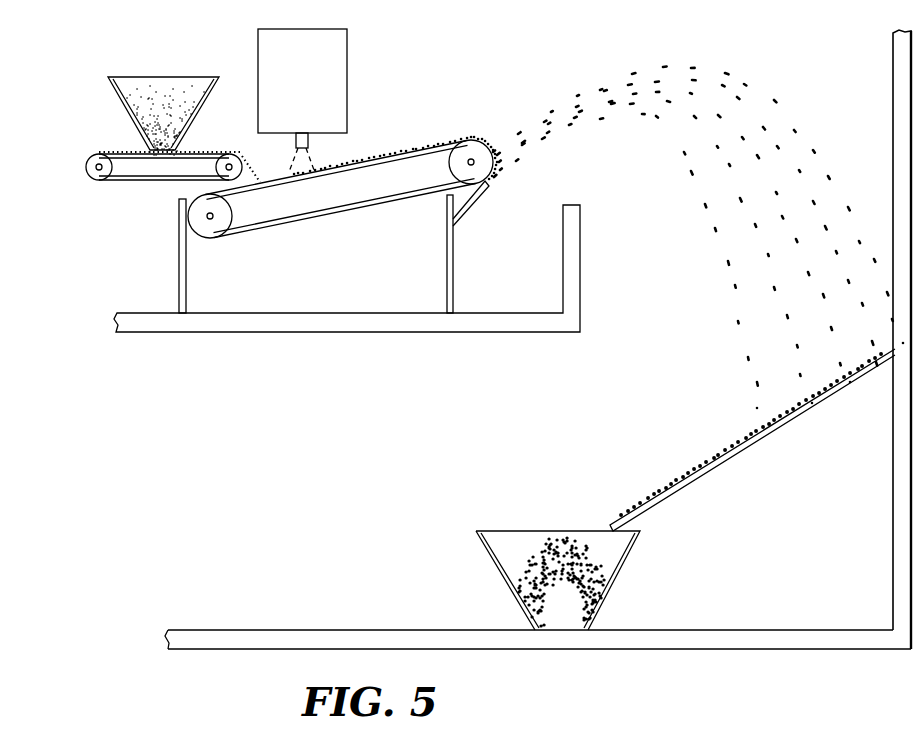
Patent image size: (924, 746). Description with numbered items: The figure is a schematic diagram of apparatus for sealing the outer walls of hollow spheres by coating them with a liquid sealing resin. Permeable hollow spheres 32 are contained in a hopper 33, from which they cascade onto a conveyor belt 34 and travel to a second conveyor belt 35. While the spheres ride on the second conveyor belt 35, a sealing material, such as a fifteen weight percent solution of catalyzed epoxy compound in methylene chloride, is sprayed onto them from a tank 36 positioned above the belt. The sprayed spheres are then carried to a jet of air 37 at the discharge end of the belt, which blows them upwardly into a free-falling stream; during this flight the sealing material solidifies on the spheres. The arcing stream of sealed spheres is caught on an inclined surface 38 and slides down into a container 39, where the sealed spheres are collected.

The permeable hollow spheres 32 is at (162, 105).
The hopper 33 is at (113, 92).
The conveyor belt 34 is at (139, 183).
The second conveyor belt 35 is at (355, 208).
The tank 36 is at (316, 82).
The jet of air 37 is at (491, 182).
The inclined surface 38 is at (705, 476).
The container 39 is at (611, 582).